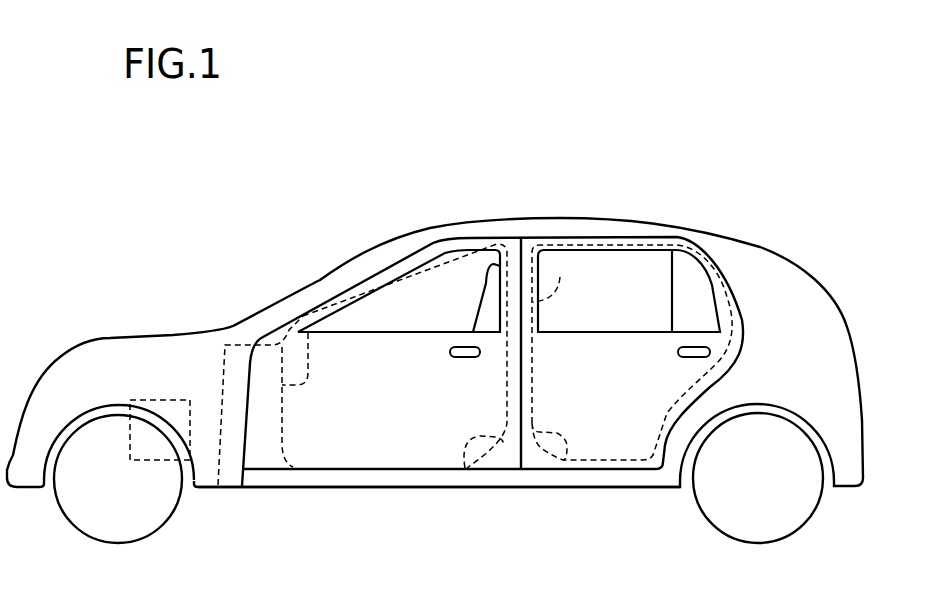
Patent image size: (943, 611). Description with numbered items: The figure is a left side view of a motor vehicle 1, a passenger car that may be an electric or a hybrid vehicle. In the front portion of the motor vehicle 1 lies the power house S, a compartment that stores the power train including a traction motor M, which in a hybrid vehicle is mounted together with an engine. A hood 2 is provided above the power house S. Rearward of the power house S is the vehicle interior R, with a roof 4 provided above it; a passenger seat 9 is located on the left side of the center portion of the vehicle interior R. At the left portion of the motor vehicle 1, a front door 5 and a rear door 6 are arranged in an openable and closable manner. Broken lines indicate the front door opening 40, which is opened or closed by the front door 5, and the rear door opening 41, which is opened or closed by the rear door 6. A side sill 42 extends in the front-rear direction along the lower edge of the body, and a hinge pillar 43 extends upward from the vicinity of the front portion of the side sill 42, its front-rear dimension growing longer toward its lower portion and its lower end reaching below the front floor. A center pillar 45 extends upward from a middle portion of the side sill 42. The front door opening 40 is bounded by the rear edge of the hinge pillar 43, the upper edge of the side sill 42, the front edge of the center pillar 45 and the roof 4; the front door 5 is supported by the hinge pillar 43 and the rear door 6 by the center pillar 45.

The motor vehicle 1 is at (654, 207).
The hood 2 is at (100, 337).
The roof 4 is at (410, 230).
The front door 5 is at (347, 457).
The rear door 6 is at (625, 445).
The passenger seat 9 is at (493, 263).
The front door opening 40 is at (465, 472).
The rear door opening 41 is at (563, 463).
The side sill 42 is at (285, 480).
The hinge pillar 43 is at (308, 333).
The center pillar 45 is at (560, 277).
The vehicle interior R is at (460, 273).
The power house S is at (177, 367).
The traction motor M is at (160, 460).